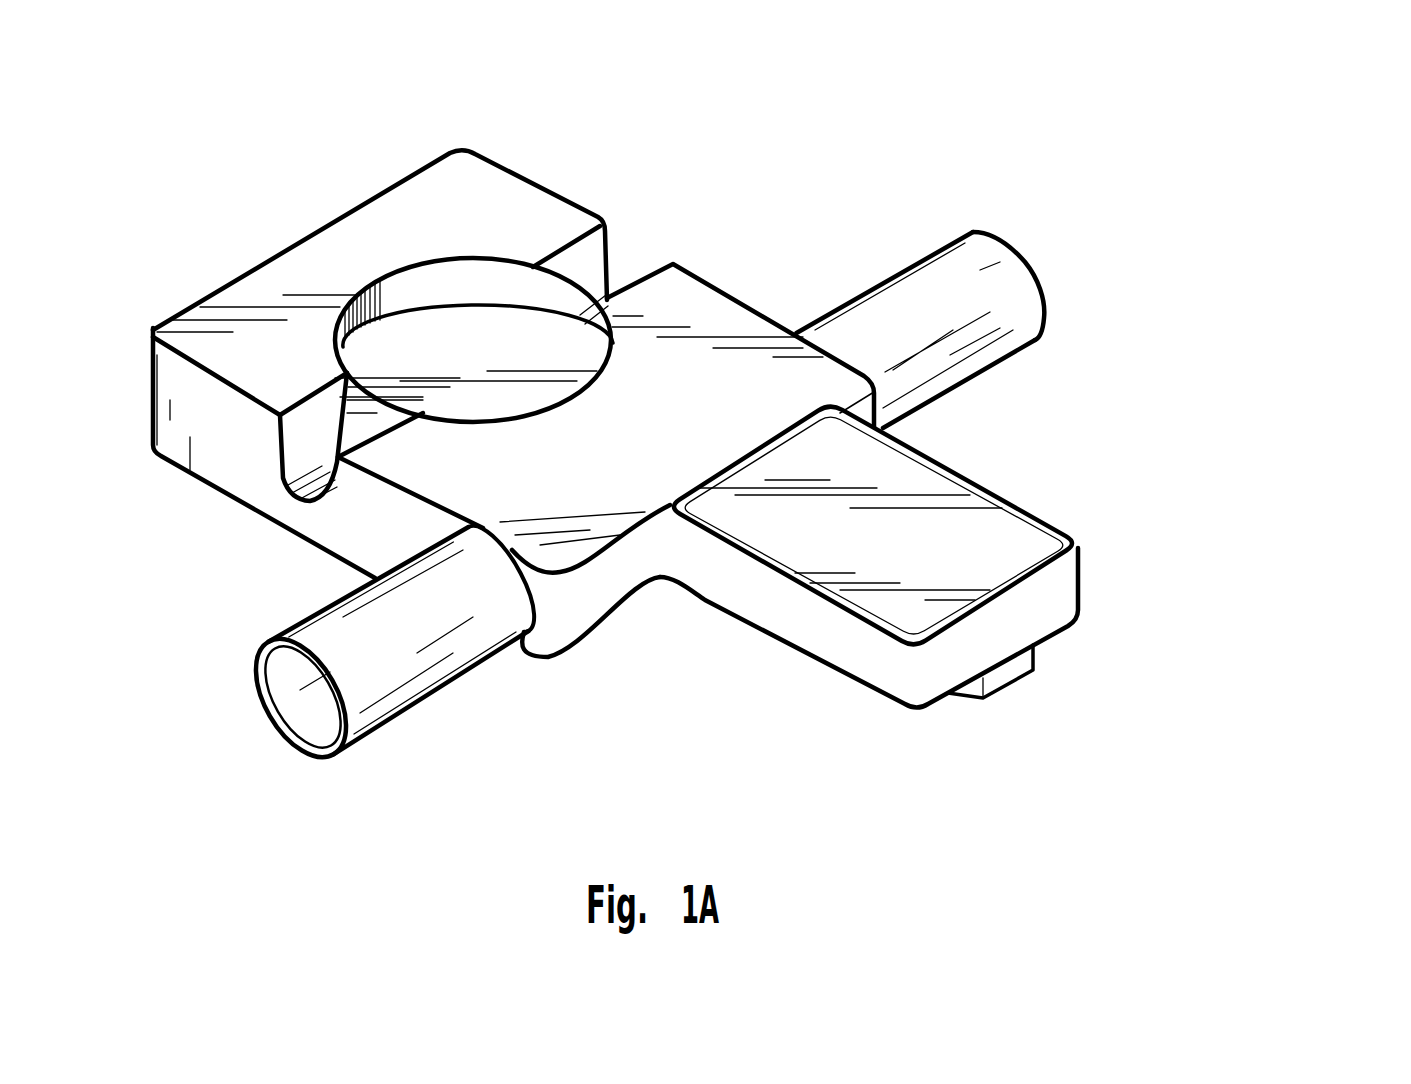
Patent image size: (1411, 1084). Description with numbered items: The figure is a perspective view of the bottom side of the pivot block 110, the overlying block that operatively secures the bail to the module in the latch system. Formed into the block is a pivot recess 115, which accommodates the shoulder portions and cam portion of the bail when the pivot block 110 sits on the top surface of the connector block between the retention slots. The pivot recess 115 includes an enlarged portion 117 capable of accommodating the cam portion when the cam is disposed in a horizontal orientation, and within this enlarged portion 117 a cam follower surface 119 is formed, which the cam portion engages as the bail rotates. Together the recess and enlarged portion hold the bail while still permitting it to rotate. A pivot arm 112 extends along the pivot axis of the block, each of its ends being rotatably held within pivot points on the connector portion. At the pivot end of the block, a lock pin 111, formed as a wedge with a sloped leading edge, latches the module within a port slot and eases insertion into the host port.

The pivot block 110 is at (725, 453).
The lock pin 111 is at (1008, 684).
The pivot arm 112 is at (1003, 277).
The pivot recess 115 is at (297, 452).
The enlarged portion 117 is at (485, 322).
The cam follower surface 119 is at (412, 360).